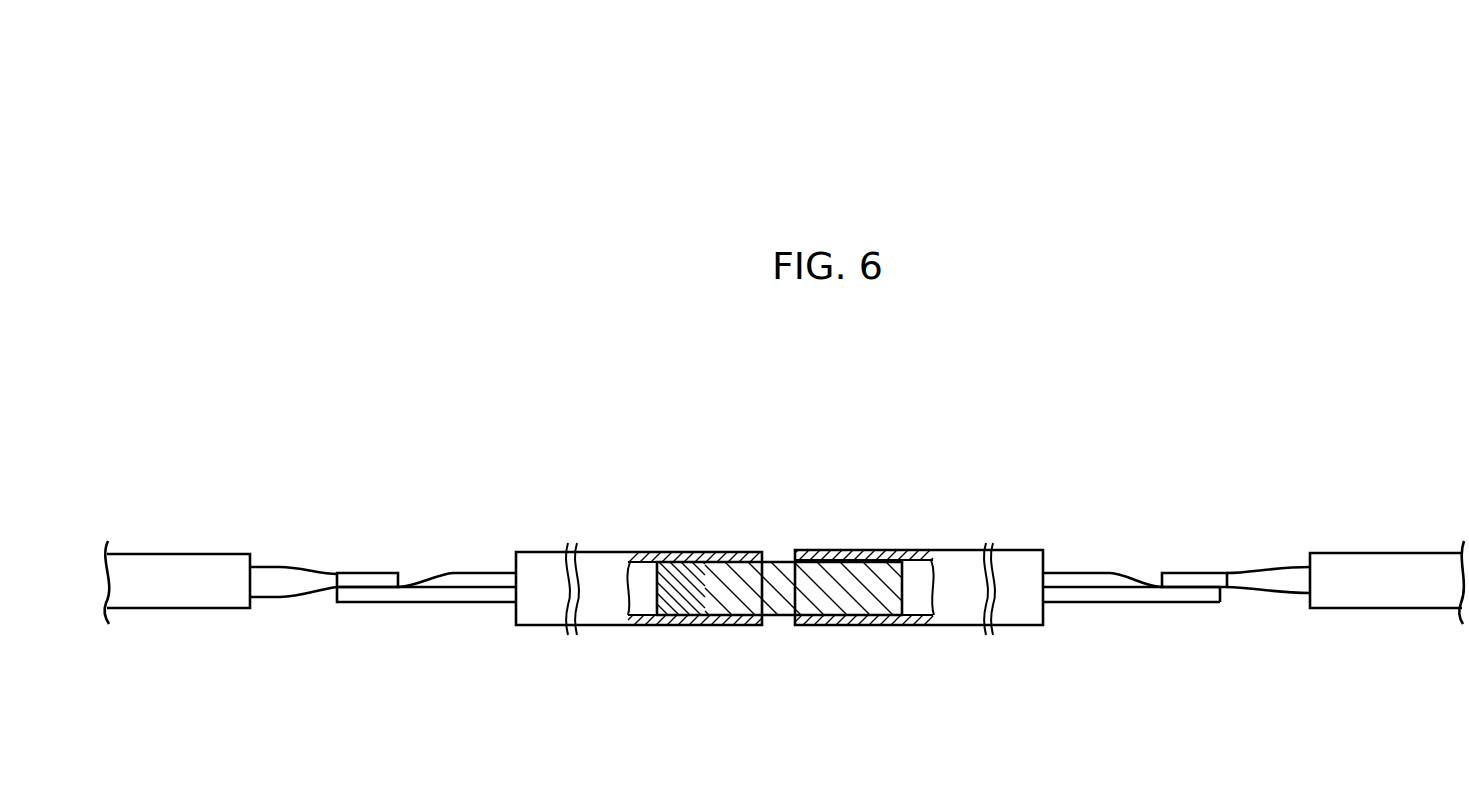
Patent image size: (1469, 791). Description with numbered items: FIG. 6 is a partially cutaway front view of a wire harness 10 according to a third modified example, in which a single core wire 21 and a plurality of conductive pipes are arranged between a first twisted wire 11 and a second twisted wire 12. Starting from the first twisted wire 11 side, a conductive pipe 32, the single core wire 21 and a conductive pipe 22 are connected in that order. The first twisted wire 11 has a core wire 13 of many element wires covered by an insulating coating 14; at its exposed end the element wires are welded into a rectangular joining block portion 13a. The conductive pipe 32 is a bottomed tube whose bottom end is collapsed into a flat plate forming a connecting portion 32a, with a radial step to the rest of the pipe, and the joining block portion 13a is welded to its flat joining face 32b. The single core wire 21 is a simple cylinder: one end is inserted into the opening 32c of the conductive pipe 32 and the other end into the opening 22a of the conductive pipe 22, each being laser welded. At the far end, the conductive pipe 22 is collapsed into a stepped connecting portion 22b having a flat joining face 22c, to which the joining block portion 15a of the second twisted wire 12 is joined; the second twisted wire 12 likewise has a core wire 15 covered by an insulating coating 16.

The wire harness 10 is at (297, 300).
The first twisted wire 11 is at (202, 553).
The second twisted wire 12 is at (1408, 553).
The core wire 13 is at (287, 566).
The joining block portion 13a is at (365, 583).
The insulating coating 14 is at (203, 595).
The core wire 15 is at (1293, 566).
The joining block portion 15a is at (1195, 580).
The insulating coating 16 is at (1408, 593).
The single core wire 21 is at (738, 605).
The conductive pipe 22 is at (1015, 615).
The opening 22a is at (796, 571).
The connecting portion 22b is at (1143, 595).
The joining face 22c is at (1216, 587).
The conductive pipe 32 is at (543, 615).
The connecting portion 32a is at (470, 595).
The joining face 32b is at (341, 582).
The opening 32c is at (760, 611).